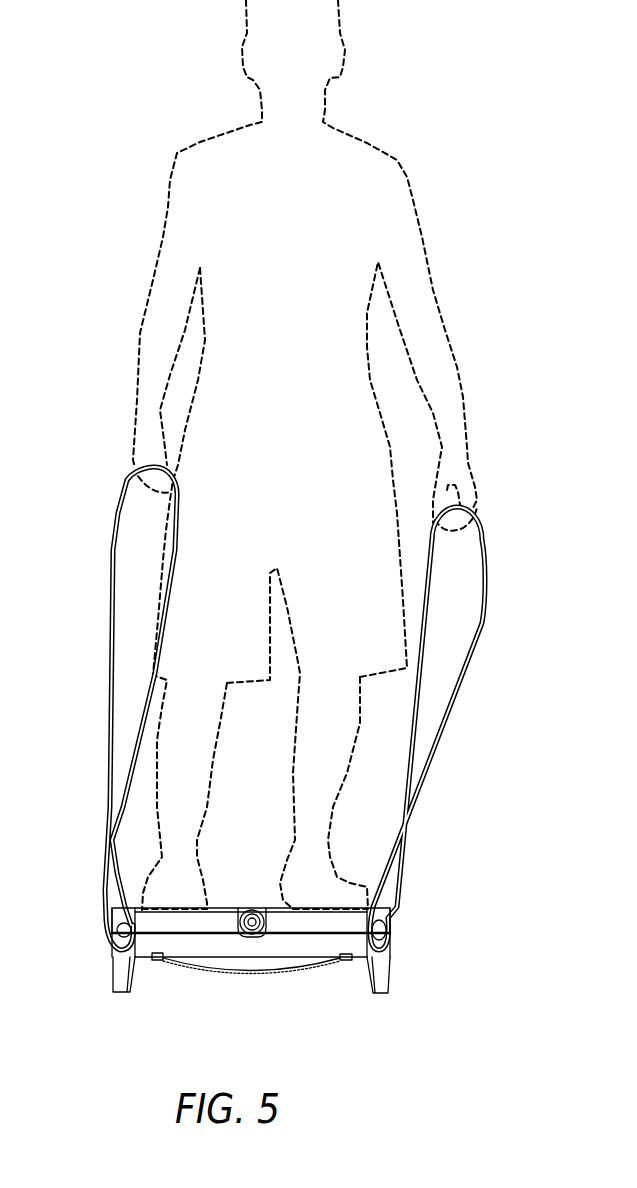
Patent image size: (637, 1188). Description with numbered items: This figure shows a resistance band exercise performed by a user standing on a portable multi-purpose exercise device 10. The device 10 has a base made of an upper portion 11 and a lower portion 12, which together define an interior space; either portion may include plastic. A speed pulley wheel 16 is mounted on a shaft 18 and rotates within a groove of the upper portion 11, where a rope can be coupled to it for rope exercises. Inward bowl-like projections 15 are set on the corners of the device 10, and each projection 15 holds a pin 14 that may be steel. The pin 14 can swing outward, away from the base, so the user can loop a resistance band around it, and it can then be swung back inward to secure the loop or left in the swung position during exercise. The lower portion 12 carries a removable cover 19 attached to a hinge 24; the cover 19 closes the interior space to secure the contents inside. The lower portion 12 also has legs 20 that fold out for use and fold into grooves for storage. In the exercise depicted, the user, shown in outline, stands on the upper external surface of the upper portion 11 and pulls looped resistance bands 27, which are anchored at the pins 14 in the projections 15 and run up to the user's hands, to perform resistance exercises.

The multi-purpose exercise device 10 is at (283, 753).
The upper portion 11 is at (400, 912).
The lower portion 12 is at (383, 948).
The pin 14 is at (387, 932).
The inward bowl-like projection 15 is at (112, 952).
The speed pulley wheel 16 is at (250, 910).
The shaft 18 is at (237, 910).
The removable cover 19 is at (233, 970).
The leg 20 is at (372, 992).
The hinge 24 is at (152, 960).
The looped resistance band 27 is at (462, 678).